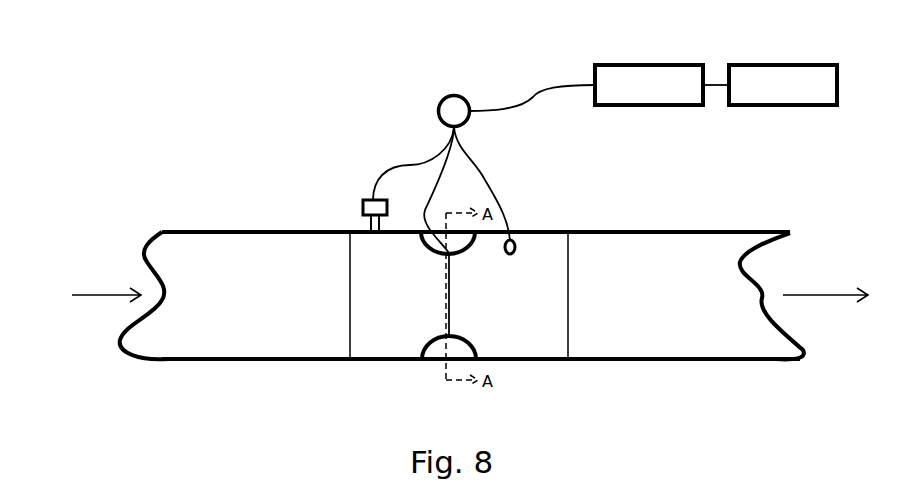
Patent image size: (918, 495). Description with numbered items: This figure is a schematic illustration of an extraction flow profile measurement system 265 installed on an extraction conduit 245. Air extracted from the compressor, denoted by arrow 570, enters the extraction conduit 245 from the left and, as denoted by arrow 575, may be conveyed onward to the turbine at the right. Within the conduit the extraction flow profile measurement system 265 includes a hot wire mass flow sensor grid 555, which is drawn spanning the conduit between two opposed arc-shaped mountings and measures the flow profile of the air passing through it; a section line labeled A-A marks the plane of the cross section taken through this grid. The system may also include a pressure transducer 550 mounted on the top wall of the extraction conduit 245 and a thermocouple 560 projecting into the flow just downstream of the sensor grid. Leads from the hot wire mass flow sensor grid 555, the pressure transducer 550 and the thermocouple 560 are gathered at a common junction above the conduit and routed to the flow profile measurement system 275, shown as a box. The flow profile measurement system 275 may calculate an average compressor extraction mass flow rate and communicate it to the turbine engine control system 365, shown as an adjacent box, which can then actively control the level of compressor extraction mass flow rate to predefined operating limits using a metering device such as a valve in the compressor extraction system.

The extraction conduit 245 is at (327, 358).
The extraction flow profile measurement system 265 is at (326, 124).
The flow profile measurement system 275 is at (648, 65).
The turbine engine control system 365 is at (783, 65).
The pressure transducer 550 is at (363, 207).
The hot wire mass flow sensor grid 555 is at (450, 313).
The thermocouple 560 is at (516, 247).
The arrow denoting air flow 570 is at (107, 295).
The arrow denoting conveyed airflow 575 is at (783, 295).